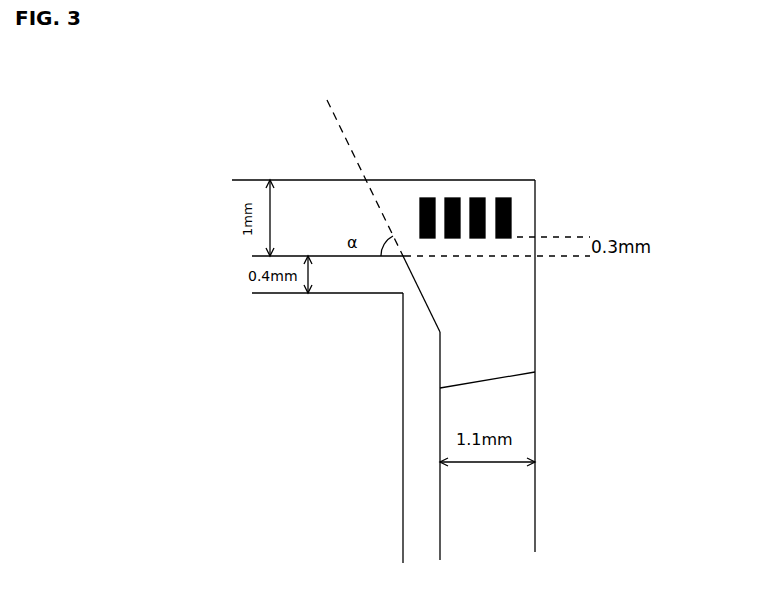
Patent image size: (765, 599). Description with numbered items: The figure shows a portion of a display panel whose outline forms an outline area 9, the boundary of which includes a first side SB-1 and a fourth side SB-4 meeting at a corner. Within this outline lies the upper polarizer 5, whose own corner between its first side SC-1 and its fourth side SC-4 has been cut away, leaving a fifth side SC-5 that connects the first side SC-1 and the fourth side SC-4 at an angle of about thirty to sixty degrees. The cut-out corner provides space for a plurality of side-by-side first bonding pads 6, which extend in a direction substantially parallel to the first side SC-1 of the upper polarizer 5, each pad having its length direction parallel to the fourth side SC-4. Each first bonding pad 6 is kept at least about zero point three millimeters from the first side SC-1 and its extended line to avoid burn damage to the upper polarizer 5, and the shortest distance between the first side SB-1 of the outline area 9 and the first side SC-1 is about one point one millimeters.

The first side of the outline area SB-1 is at (393, 180).
The first bonding pads 6 is at (512, 217).
The outline area 9 is at (535, 312).
The fifth side of the upper polarizer SC-5 is at (423, 298).
The first side of the upper polarizer SC-1 is at (345, 256).
The upper polarizer 5 is at (535, 372).
The fourth side of the upper polarizer SC-4 is at (440, 430).
The fourth side of the outline area SB-4 is at (535, 407).